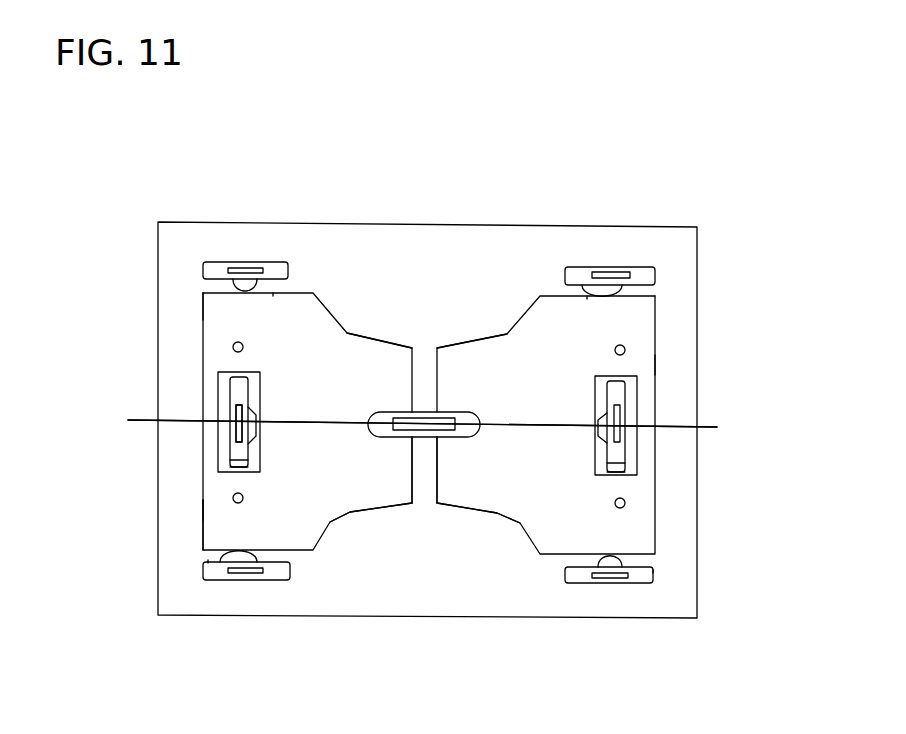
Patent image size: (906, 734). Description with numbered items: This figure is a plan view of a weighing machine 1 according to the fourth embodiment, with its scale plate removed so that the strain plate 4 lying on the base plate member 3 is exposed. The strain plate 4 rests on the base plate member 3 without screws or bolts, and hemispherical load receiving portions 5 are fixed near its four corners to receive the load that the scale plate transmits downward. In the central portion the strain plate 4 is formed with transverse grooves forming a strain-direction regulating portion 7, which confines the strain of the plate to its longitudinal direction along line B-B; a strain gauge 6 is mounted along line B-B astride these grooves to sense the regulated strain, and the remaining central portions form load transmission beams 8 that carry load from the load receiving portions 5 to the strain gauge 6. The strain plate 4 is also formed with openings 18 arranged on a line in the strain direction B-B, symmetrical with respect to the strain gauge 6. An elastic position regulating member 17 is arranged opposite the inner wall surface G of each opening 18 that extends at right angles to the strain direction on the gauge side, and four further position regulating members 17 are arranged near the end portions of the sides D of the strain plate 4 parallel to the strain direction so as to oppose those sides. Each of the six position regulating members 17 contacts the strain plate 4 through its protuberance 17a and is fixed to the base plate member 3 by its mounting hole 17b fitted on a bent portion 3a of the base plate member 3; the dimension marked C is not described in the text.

The weighing machine 1 is at (400, 222).
The base plate member 3 is at (628, 240).
The bent portion 3a is at (255, 260).
The strain plate 4 is at (380, 337).
The load receiving portions 5 is at (243, 350).
The strain gauge 6 is at (400, 440).
The strain-direction regulating portion 7 is at (437, 503).
The load transmission beams 8 is at (310, 440).
The elastic position regulating member 17 is at (212, 270).
The protuberance 17a is at (246, 418).
The mounting hole 17b is at (242, 418).
The openings 18 is at (222, 405).
The line B- B is at (422, 424).
The dimension C is at (200, 510).
The sides D is at (273, 292).
The inner wall surface G is at (248, 470).